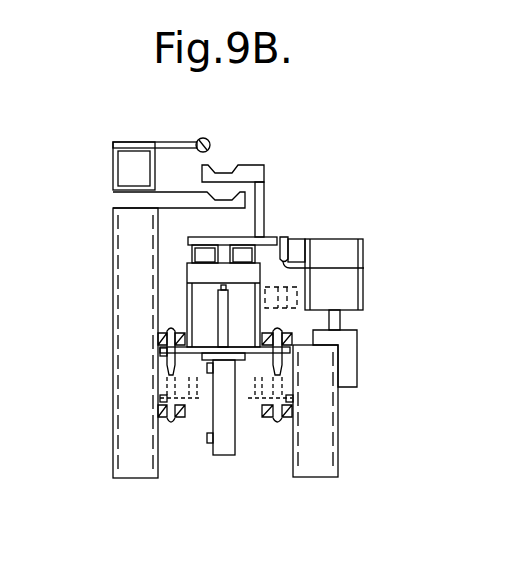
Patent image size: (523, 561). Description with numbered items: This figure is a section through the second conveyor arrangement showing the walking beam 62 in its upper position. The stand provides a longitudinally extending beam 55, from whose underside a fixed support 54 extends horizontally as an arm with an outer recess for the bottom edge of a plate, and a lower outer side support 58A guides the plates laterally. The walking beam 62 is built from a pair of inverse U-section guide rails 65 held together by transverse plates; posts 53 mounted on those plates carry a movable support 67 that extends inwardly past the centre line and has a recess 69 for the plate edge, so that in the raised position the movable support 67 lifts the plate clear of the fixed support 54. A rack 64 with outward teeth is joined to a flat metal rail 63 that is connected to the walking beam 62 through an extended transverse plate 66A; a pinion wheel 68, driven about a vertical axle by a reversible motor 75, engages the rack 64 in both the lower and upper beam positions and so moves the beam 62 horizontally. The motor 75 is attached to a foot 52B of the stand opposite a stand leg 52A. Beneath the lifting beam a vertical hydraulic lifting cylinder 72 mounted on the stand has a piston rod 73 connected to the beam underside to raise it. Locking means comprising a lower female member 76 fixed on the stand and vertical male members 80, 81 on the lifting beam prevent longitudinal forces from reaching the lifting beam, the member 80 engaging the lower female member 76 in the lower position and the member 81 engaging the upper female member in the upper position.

The stand leg 52A is at (128, 411).
The foot 52B is at (330, 438).
The post 53 is at (259, 173).
The fixed support 54 is at (140, 205).
The longitudinally extending beam 55 is at (113, 157).
The lower outer side support 58A is at (199, 140).
The walking beam 62 is at (175, 311).
The flat metal rail 63 is at (364, 268).
The rack 64 is at (296, 247).
The guide rail 65 is at (190, 254).
The extended transverse plate 66A is at (277, 238).
The movable support 67 is at (250, 173).
The pinion wheel 68 is at (347, 241).
The recess 69 is at (220, 180).
The second hydraulic lifting cylinder 72 is at (222, 456).
The piston rod 73 is at (218, 305).
The reversible motor 75 is at (357, 362).
The lower female member 76 is at (182, 420).
The male member 80 is at (163, 337).
The male member 81 is at (160, 360).